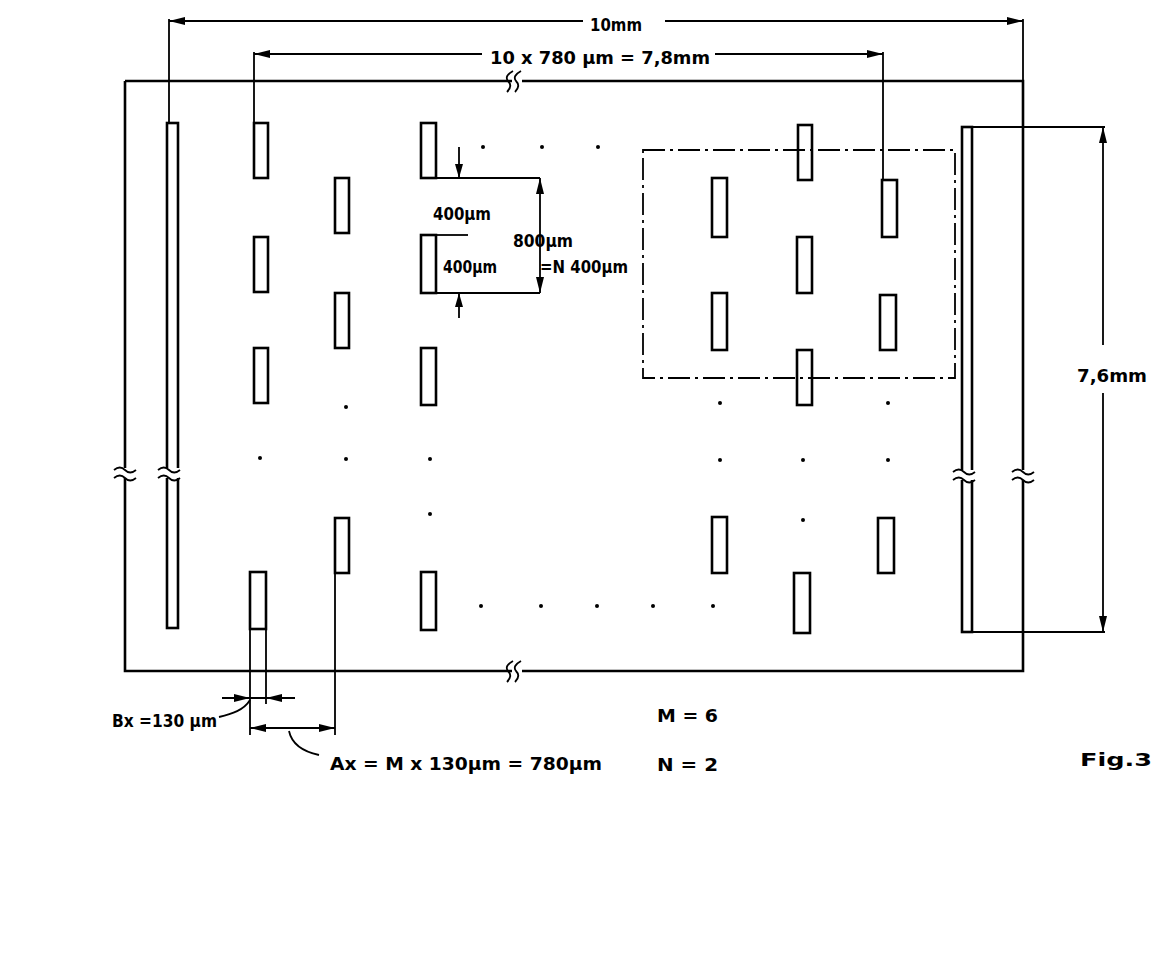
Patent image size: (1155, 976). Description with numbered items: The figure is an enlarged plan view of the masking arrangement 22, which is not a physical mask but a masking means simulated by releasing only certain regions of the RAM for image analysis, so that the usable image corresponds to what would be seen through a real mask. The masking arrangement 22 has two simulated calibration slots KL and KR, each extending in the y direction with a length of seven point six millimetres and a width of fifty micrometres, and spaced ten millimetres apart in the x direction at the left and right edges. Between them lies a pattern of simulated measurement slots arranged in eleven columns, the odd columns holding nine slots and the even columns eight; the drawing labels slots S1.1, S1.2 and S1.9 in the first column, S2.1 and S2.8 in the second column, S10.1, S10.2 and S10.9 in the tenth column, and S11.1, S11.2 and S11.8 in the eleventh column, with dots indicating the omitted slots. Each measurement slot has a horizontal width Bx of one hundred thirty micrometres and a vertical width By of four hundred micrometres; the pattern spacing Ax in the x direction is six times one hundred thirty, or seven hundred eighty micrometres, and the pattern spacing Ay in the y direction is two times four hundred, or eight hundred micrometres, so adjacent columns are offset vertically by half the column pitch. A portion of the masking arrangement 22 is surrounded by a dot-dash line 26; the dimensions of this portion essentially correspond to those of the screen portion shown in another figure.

The masking arrangement 22 is at (900, 705).
The group of sensor elements (dash-dot outline) 26 is at (712, 148).
The left simulated calibration slot KL is at (167, 440).
The right simulated calibration slot KR is at (968, 432).
The simulated measurement slot S1.1 is at (268, 136).
The simulated measurement slot S1.2 is at (268, 271).
The simulated measurement slot S1.9 is at (266, 612).
The simulated measurement slot S2.1 is at (341, 213).
The simulated measurement slot S2.8 is at (342, 541).
The simulated measurement slot S10.1 is at (808, 137).
The simulated measurement slot S10.2 is at (812, 271).
The simulated measurement slot S10.9 is at (805, 605).
The simulated measurement slot S11.1 is at (886, 205).
The simulated measurement slot S11.2 is at (886, 333).
The simulated measurement slot S11.8 is at (886, 540).